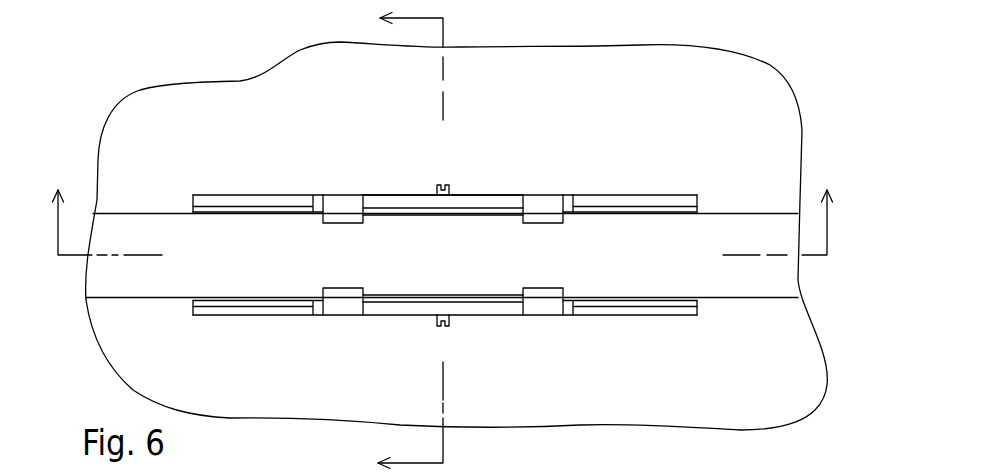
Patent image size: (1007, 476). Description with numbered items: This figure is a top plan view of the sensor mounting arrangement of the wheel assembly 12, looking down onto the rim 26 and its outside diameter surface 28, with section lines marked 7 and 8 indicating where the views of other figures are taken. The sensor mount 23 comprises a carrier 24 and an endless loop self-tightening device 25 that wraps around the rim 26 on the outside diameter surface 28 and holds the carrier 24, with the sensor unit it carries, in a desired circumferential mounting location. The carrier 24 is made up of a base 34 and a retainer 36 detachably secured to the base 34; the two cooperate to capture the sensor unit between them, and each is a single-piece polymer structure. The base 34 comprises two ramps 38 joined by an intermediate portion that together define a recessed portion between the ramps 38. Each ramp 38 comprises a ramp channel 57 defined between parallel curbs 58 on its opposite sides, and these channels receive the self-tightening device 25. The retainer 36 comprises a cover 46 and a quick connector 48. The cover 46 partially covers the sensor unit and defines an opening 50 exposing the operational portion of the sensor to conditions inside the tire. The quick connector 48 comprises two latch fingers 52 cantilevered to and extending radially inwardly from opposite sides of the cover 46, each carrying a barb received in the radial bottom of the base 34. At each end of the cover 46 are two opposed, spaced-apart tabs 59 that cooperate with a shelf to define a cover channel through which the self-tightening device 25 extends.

The section line 7- 7 is at (441, 208).
The section line 8- 8 is at (399, 240).
The wheel assembly 12 is at (98, 102).
The sensor mount 23 is at (735, 202).
The carrier 24 is at (670, 70).
The endless loop self-tightening device 25 is at (675, 240).
The rim 26 is at (293, 90).
The outside diameter surface 28 is at (157, 160).
The base 34 is at (613, 195).
The retainer 36 is at (530, 195).
The ramp 38 is at (273, 313).
The cover 46 is at (495, 195).
The quick connector 48 is at (382, 87).
The opening 50 is at (441, 300).
The latch finger 52 is at (438, 185).
The ramp channel 57 is at (241, 212).
The curb 58 is at (690, 200).
The tab 59 is at (337, 220).